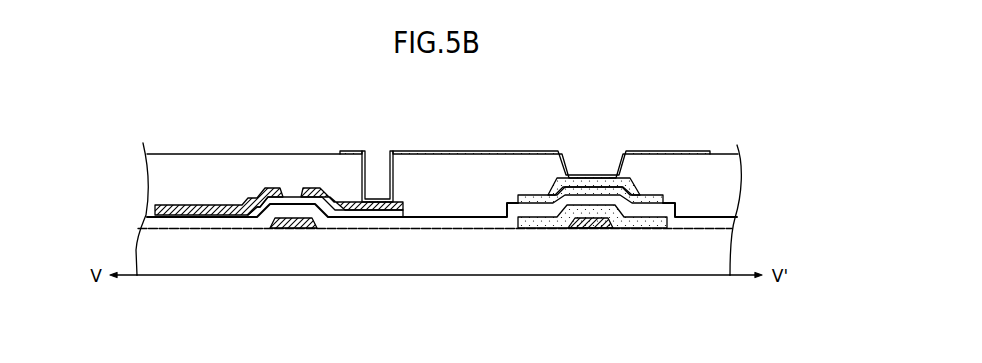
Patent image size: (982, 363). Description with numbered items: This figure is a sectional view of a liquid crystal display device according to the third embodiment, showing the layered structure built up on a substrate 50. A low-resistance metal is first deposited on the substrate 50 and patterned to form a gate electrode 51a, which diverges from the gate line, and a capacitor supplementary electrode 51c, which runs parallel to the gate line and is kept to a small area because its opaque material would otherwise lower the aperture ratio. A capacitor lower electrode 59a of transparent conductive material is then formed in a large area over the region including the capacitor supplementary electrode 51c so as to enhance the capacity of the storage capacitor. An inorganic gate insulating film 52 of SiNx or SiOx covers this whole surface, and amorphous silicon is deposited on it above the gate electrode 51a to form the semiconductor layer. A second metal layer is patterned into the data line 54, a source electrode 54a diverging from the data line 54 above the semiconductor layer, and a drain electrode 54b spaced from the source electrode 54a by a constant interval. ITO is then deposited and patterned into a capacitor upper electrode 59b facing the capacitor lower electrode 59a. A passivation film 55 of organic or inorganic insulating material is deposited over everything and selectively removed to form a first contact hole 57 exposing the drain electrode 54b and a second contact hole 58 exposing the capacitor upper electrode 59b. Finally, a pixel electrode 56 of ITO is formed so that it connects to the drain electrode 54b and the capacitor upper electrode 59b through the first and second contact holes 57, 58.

The substrate 50 is at (720, 249).
The gate electrode 51a is at (292, 230).
The capacitor supplementary electrode 51c is at (592, 230).
The gate insulating film 52 is at (471, 222).
The data line 54 is at (197, 206).
The source electrode 54a is at (267, 188).
The drain electrode 54b is at (323, 188).
The passivation film 55 is at (733, 181).
The pixel electrode 56 is at (666, 151).
The first contact hole 57 is at (378, 173).
The second contact hole 58 is at (589, 163).
The capacitor lower electrode 59a is at (542, 224).
The capacitor upper electrode 59b is at (529, 196).